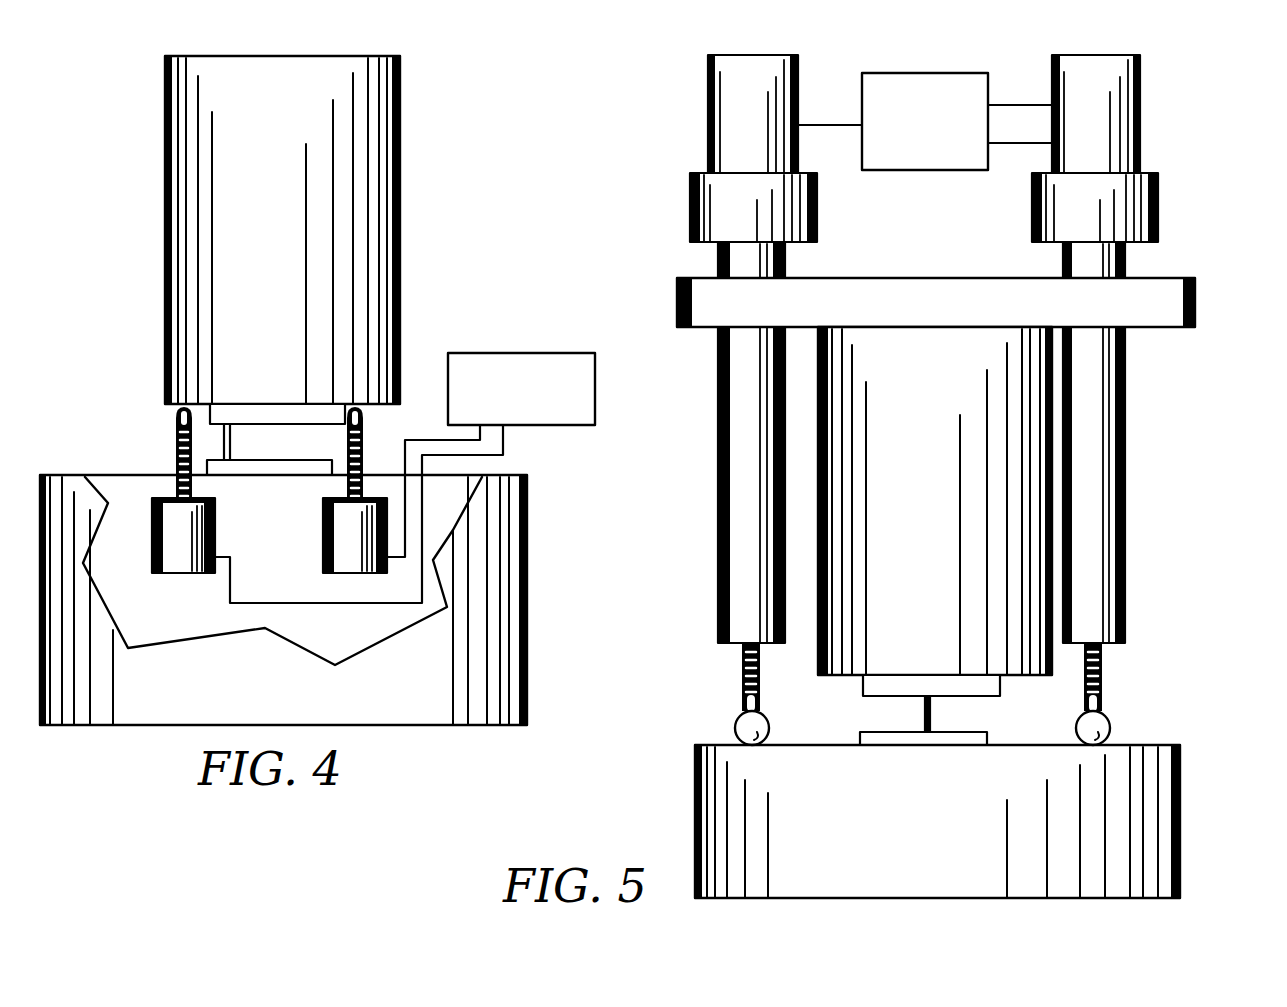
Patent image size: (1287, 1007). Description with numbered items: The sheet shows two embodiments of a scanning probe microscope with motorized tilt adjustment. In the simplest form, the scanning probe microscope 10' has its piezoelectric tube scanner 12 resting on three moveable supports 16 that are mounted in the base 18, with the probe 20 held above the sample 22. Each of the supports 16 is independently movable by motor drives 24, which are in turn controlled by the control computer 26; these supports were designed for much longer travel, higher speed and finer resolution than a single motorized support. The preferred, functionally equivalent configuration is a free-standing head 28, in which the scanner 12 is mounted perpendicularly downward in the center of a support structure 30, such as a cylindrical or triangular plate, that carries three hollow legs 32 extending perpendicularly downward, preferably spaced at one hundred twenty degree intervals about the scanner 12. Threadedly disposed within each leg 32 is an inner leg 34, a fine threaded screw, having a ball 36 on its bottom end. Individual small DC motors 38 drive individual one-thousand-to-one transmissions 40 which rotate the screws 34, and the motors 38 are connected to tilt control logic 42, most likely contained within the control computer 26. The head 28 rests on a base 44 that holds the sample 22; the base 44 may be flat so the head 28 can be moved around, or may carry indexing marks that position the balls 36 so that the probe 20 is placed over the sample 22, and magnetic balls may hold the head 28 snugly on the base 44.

In FIG. 4, the scanning probe microscope 10' is at (321, 390).
In FIG. 4, the piezoelectric tube scanner 12 is at (355, 266).
In FIG. 5, the piezoelectric tube scanner 12 is at (893, 352).
In FIG. 4, the moveable supports 16 is at (175, 463).
In FIG. 4, the base 18 is at (75, 477).
In FIG. 4, the probe 20 is at (231, 431).
In FIG. 5, the probe 20 is at (930, 714).
In FIG. 4, the sample 22 is at (297, 472).
In FIG. 5, the sample 22 is at (893, 738).
In FIG. 4, the motor drives 24 is at (323, 522).
In FIG. 4, the control computer 26 is at (538, 427).
In FIG. 5, the free-standing head 28 is at (934, 349).
In FIG. 5, the support structure 30 is at (948, 278).
In FIG. 5, the hollow legs 32 is at (738, 493).
In FIG. 5, the inner legs 34 is at (742, 662).
In FIG. 5, the ball 36 is at (762, 722).
In FIG. 5, the DC motors 38 is at (728, 118).
In FIG. 5, the transmissions 40 is at (695, 225).
In FIG. 5, the tilt control logic 42 is at (925, 170).
In FIG. 5, the base 44 is at (695, 825).